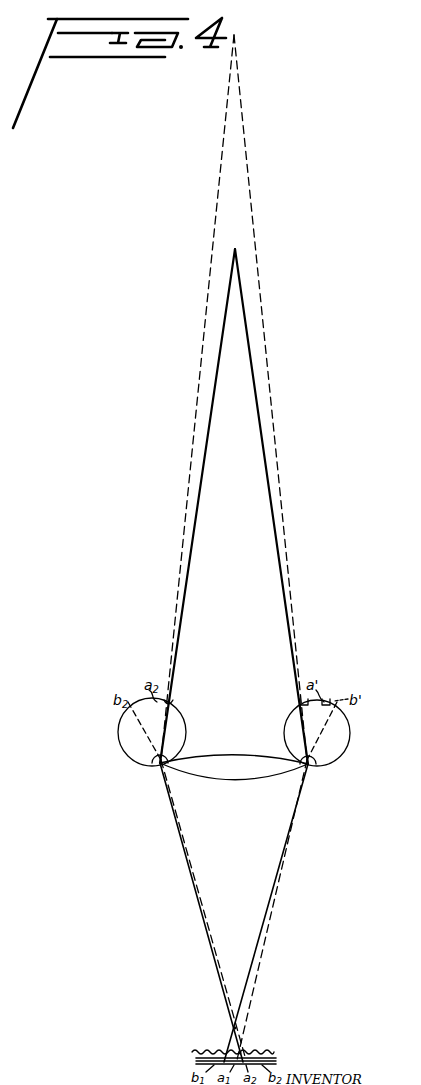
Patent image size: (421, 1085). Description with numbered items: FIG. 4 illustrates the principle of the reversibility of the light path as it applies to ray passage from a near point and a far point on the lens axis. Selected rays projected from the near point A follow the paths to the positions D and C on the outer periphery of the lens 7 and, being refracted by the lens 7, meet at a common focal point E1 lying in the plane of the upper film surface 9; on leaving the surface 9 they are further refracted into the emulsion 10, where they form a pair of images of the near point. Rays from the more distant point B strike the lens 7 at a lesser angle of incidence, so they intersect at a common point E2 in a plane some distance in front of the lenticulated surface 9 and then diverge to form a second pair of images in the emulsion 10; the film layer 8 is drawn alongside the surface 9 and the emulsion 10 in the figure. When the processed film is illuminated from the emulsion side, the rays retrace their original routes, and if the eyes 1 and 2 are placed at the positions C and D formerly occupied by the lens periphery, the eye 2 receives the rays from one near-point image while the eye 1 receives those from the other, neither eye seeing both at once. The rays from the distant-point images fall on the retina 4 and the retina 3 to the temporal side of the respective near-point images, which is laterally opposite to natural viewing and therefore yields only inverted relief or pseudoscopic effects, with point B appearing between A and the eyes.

The eye 1 is at (134, 737).
The eye 2 is at (337, 732).
The retina 3 is at (172, 702).
The retina 4 is at (302, 703).
The lens 7 is at (262, 764).
The light-sensitive surface 8 is at (192, 1052).
The upper film surface 9 is at (270, 1052).
The emulsion 10 is at (278, 1063).
The near point A is at (234, 501).
The distant point B is at (234, 395).
The lens periphery position C is at (161, 767).
The lens periphery position D is at (312, 770).
The common focal point E1 is at (240, 1052).
The common point E2 is at (238, 1024).